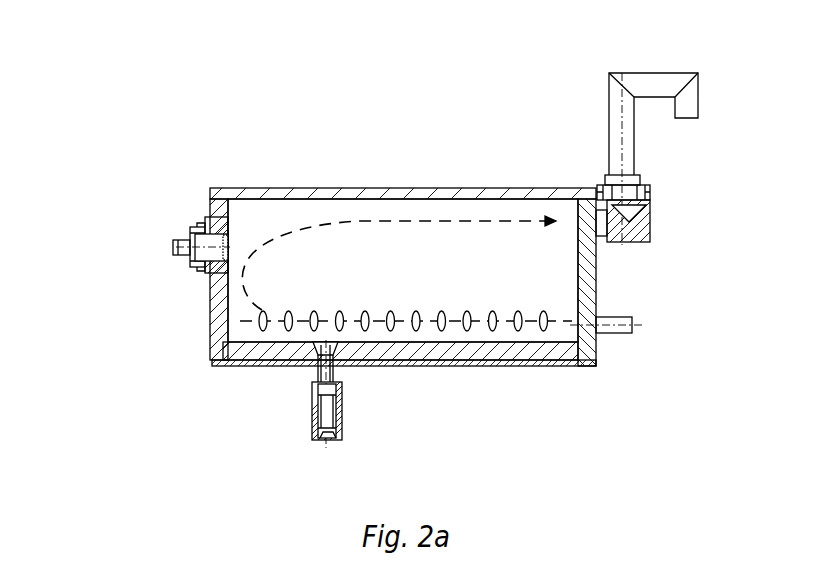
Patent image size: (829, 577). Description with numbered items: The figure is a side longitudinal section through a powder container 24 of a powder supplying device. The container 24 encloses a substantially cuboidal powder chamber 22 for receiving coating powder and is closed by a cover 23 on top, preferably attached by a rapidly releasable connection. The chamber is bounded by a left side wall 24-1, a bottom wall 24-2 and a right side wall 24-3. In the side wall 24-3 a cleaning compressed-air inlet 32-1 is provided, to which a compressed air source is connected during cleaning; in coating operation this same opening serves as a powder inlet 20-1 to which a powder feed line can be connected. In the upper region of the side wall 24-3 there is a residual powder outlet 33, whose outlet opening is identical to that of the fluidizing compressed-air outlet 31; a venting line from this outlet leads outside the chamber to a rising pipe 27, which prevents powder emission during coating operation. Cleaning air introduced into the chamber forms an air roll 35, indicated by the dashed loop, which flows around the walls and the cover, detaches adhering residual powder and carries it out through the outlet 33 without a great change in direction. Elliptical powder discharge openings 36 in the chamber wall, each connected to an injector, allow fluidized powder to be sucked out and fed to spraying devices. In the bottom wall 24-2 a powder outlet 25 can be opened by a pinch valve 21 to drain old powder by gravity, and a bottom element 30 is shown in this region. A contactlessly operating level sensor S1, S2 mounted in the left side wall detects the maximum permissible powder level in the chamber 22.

The powder container 24 is at (403, 253).
The powder chamber 22 is at (265, 220).
The cover 23 is at (302, 195).
The air roll 35 is at (448, 220).
The powder discharge openings 36 is at (262, 328).
The bottom 30 is at (288, 355).
The powder outlet 25 is at (326, 344).
The pinch valve 21 is at (313, 412).
The side wall 24-1 is at (212, 317).
The bottom wall 24-2 is at (393, 344).
The side wall 24-3 is at (590, 297).
The rising pipe 27 is at (648, 83).
The fluidizing compressed-air outlet 31 is at (584, 179).
The residual powder outlet 33 is at (598, 220).
The powder inlet 20-1 is at (665, 307).
The cleaning compressed-air inlet 32-1 is at (632, 318).
The level sensor S1 is at (161, 229).
The level sensor S2 is at (202, 243).